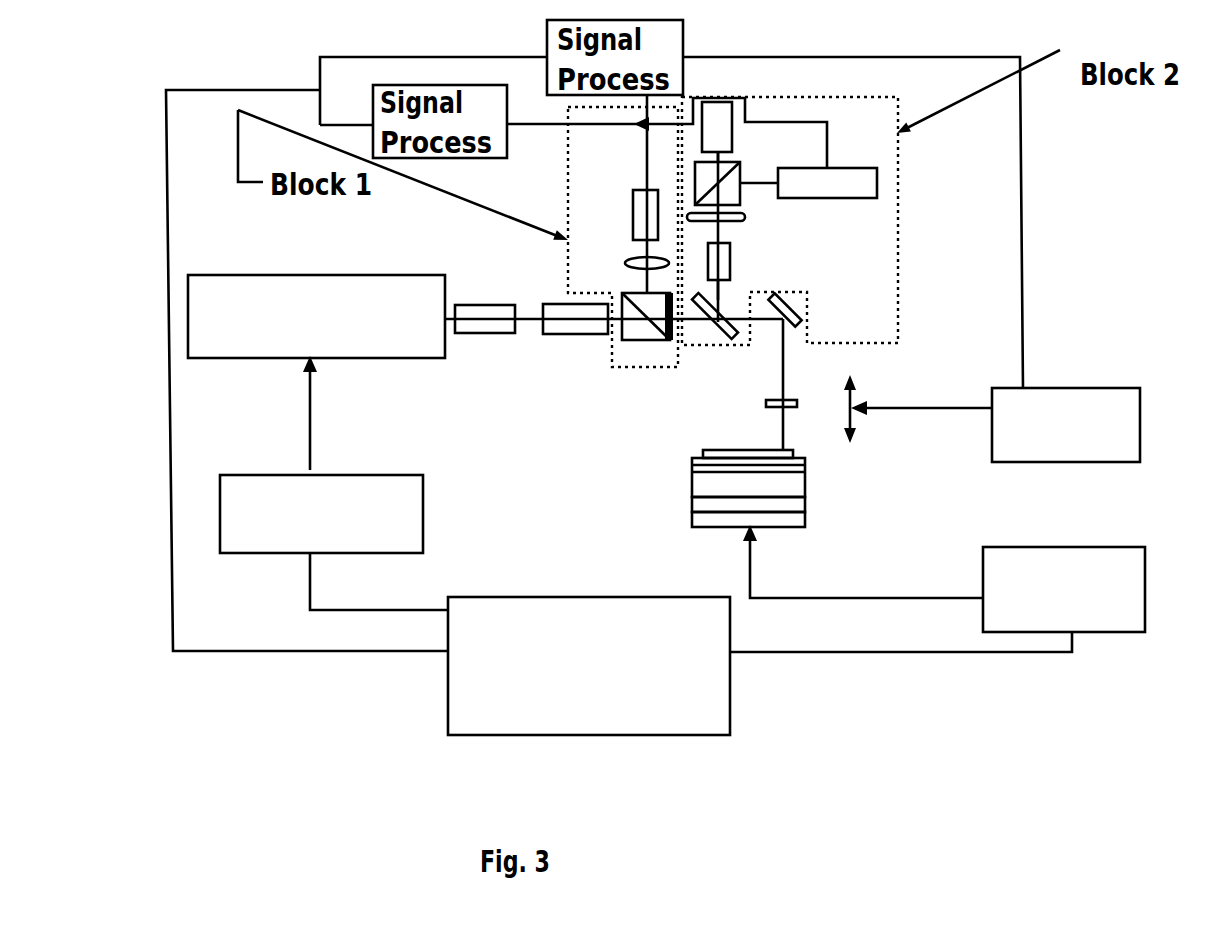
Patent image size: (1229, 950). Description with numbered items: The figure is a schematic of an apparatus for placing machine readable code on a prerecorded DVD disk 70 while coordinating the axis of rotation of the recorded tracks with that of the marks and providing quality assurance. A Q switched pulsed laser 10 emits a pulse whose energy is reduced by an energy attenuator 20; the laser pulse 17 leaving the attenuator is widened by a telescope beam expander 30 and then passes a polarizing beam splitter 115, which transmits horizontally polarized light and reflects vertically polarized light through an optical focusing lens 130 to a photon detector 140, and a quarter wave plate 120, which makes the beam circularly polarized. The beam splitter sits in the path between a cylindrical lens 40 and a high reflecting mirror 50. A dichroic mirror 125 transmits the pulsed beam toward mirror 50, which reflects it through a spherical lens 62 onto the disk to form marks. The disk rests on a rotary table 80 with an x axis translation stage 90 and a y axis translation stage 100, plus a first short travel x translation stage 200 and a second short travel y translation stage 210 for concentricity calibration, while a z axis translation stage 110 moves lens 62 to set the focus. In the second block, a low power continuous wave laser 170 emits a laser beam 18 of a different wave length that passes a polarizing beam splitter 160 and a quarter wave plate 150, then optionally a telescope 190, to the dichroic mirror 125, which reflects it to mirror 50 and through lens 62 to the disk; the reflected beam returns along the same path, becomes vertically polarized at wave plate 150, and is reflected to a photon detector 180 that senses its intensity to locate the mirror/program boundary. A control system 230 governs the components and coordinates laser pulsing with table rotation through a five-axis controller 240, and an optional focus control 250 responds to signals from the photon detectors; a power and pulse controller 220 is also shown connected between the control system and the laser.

The Q switched pulsed laser 10 is at (316, 292).
The laser pulse 17 is at (484, 345).
The laser beam 18 is at (735, 150).
The energy attenuator 20 is at (536, 292).
The telescope beam expander 30 is at (618, 237).
The cylindrical lens 40 is at (729, 330).
The high reflecting mirror 50 is at (798, 298).
The spherical lens 62 is at (766, 403).
The DVD disk 70 is at (725, 447).
The rotary table 80 is at (805, 487).
The x axis translation stage 90 is at (805, 503).
The y axis translation stage 100 is at (805, 520).
The z axis translation stage 110 is at (867, 407).
The polarizing beam splitter 115 is at (595, 262).
The quarter wave plate 120 is at (661, 343).
The dichroic mirror 125 is at (801, 281).
The optical focusing lens 130 is at (594, 208).
The photon detector 140 is at (651, 193).
The quarter wave plate 150 is at (745, 217).
The polarizing beam splitter 160 is at (717, 167).
The low power continuous wave laser 170 is at (712, 109).
The photon detector 180 is at (813, 221).
The telescope 190 is at (796, 256).
The first short travel x translation stage 200 is at (690, 458).
The second short travel y translation stage 210 is at (692, 467).
The power and pulse controller 220 is at (352, 514).
The control system 230 is at (619, 666).
The 5-axis controller 240 is at (1094, 589).
The focus control 250 is at (1096, 423).